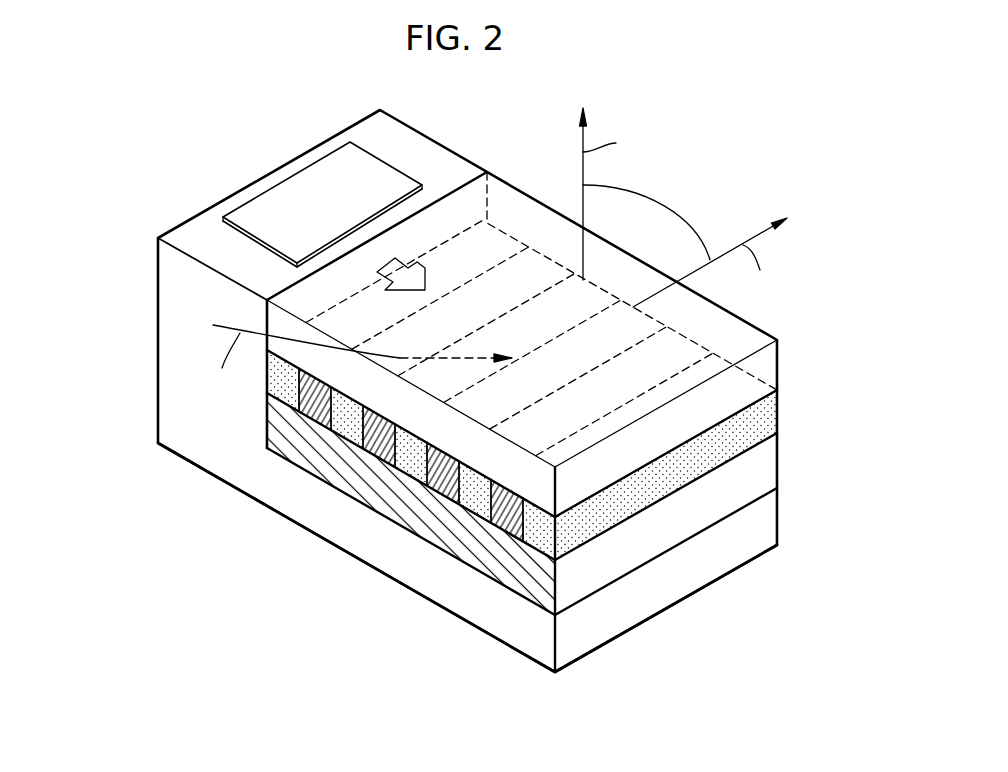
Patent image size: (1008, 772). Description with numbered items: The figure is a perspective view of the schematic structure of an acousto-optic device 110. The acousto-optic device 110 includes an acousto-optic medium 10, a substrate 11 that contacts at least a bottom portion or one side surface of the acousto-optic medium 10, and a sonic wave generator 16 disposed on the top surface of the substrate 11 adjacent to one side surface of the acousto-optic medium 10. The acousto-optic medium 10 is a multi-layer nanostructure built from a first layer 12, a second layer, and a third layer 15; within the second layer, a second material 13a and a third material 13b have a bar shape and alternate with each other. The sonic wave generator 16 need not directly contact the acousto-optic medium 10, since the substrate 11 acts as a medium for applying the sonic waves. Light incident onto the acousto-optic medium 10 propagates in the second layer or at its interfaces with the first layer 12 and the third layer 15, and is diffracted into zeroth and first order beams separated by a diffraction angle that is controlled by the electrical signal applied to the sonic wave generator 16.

The acousto-optic medium 10 is at (553, 183).
The substrate 11 is at (777, 520).
The first layer 12 is at (777, 463).
The second material 13a is at (777, 417).
The third material 13b is at (508, 515).
The third layer 15 is at (777, 370).
The sonic wave generator 16 is at (292, 183).
The acousto-optic device 110 is at (103, 403).